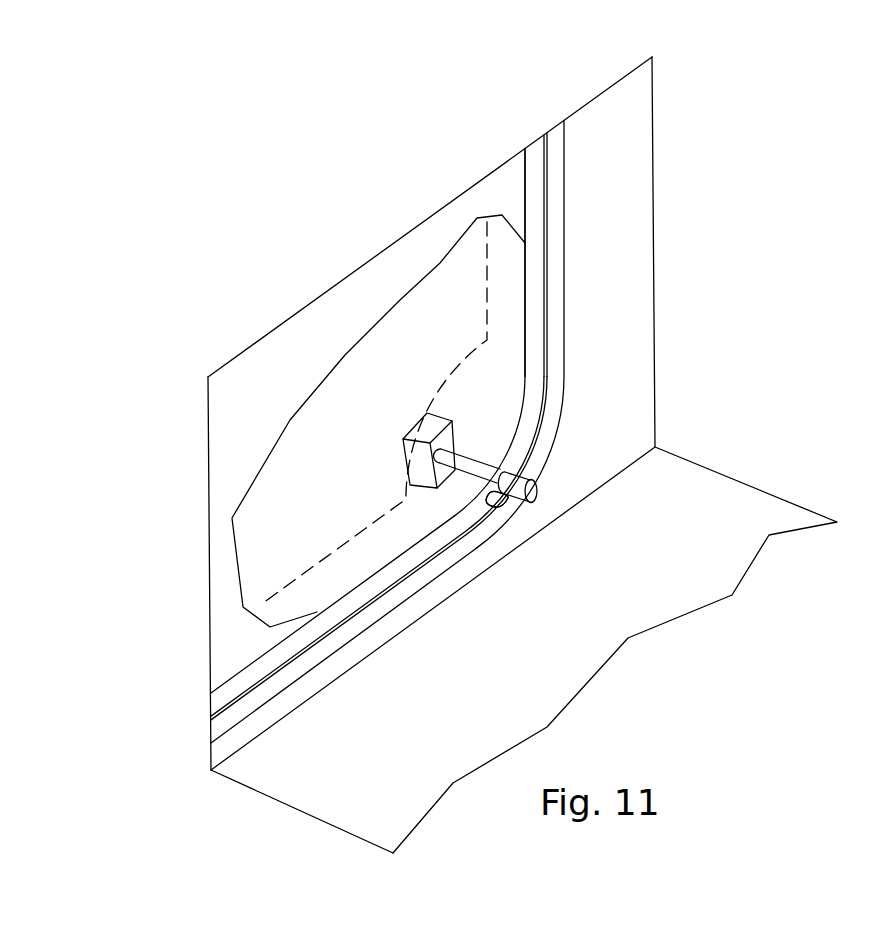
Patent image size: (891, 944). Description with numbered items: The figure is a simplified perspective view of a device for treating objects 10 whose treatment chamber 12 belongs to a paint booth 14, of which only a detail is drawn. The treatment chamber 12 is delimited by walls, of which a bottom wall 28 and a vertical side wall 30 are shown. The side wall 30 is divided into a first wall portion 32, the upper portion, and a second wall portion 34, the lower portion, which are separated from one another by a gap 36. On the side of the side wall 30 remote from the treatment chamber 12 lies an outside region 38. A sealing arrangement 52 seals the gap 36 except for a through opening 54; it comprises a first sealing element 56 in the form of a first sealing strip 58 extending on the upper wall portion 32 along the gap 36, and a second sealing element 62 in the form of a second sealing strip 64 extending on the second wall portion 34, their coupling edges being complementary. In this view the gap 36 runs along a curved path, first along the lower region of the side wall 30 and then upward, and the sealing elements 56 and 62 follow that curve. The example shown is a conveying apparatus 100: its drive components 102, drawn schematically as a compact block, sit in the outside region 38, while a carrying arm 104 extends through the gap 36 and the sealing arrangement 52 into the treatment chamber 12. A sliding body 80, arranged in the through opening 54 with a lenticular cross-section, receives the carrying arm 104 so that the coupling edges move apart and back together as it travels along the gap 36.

The device for treating objects 10 is at (181, 154).
The treatment chamber 12 is at (745, 340).
The paint booth 14 is at (244, 792).
The bottom wall 28 is at (690, 598).
The side wall 30 is at (226, 592).
The first wall portion 32 is at (220, 696).
The second wall portion 34 is at (221, 726).
The gap 36 is at (390, 598).
The outside region 38 is at (347, 402).
The sealing arrangement 52 is at (537, 126).
The through opening 54 is at (487, 505).
The first sealing element 56 is at (527, 163).
The first sealing strip 58 is at (535, 168).
The second sealing element 62 is at (553, 146).
The second sealing strip 64 is at (556, 138).
The sliding body 80 is at (513, 470).
The conveying apparatus 100 is at (484, 426).
The drive components 102 is at (427, 408).
The carrying arm 104 is at (535, 498).